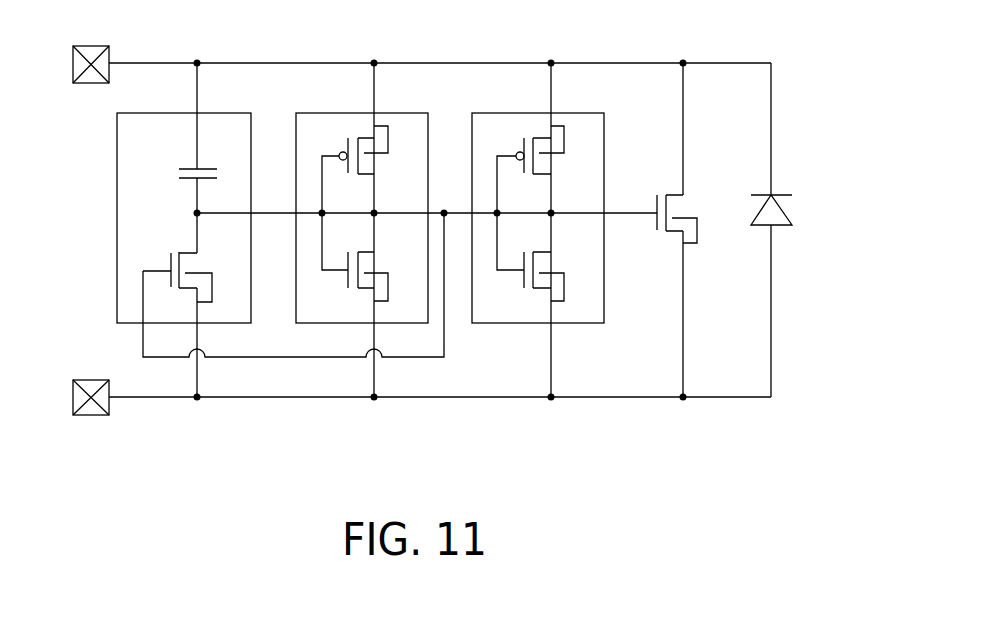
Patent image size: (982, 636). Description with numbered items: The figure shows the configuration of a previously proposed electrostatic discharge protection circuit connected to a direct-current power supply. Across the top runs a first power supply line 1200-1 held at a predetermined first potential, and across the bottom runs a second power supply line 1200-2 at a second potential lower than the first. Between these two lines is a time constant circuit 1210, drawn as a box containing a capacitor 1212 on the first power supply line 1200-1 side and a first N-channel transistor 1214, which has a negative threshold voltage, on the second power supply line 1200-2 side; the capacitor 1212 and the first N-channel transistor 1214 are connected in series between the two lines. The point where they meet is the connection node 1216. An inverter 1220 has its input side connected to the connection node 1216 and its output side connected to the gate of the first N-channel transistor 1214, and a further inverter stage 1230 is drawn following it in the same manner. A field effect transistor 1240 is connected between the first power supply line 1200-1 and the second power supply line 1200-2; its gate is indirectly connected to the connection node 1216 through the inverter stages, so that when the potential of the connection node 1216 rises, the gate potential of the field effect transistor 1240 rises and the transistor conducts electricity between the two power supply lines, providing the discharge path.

The first power supply line 1200-1 is at (273, 63).
The second power supply line 1200-2 is at (260, 398).
The time constant circuit 1210 is at (117, 162).
The capacitor 1212 is at (178, 168).
The first N-channel transistor 1214 is at (179, 256).
The connection node 1216 is at (197, 213).
The inverter 1220 is at (308, 113).
The second inverter 1230 is at (485, 113).
The field effect transistor 1240 is at (687, 203).